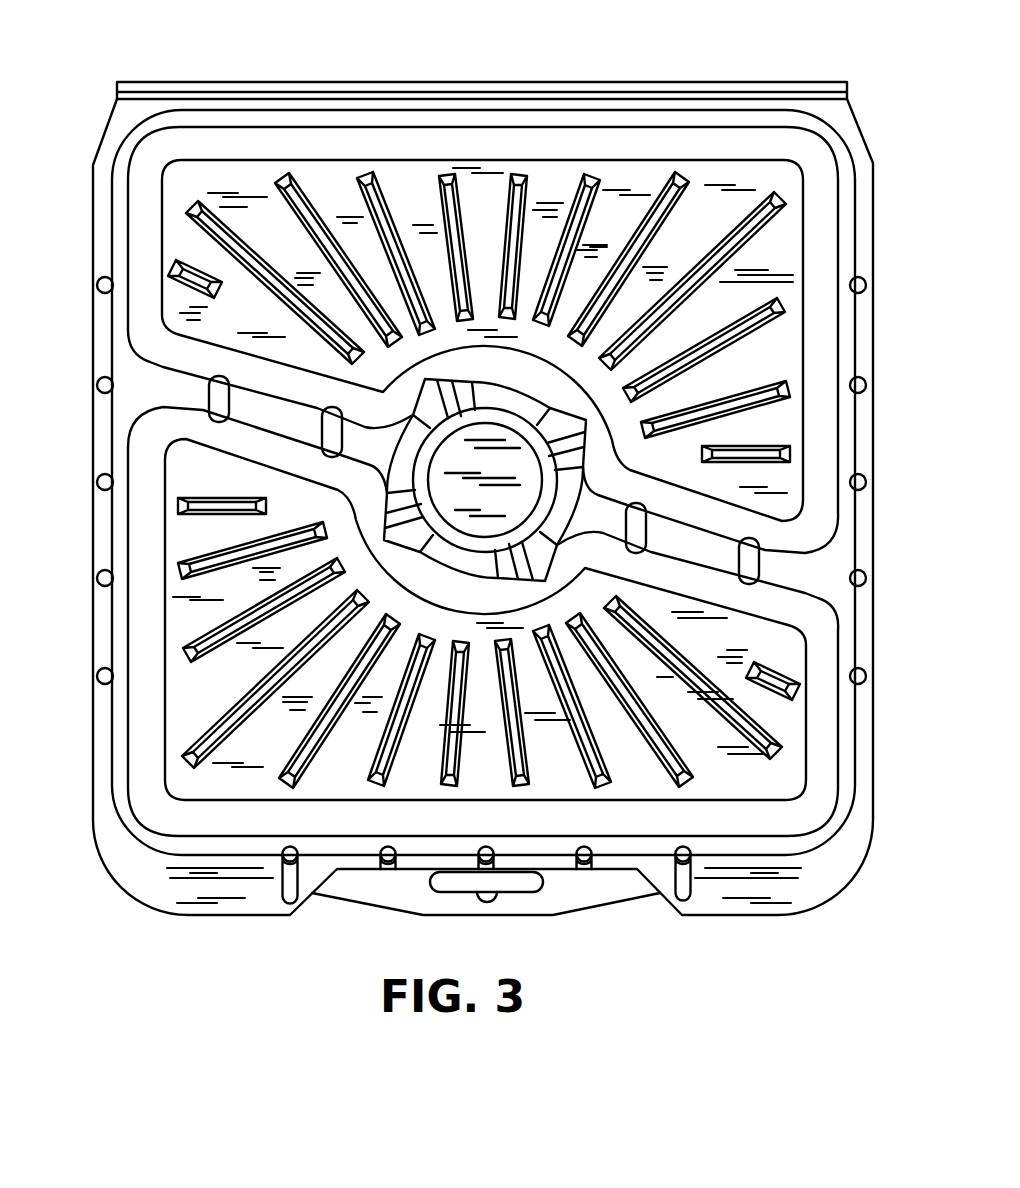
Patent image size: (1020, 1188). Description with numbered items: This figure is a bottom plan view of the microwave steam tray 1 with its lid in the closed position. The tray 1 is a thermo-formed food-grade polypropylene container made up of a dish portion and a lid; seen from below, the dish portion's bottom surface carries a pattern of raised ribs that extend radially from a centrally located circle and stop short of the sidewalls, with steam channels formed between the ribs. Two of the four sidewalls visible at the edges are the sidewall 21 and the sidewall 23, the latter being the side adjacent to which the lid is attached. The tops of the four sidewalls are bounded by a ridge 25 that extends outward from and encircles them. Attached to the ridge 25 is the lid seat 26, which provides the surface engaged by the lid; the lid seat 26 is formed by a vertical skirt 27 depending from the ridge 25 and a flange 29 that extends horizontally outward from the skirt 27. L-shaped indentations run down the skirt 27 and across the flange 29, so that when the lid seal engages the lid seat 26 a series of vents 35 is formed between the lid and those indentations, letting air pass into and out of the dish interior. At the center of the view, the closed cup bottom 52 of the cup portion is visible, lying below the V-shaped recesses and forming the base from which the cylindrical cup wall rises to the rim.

The microwave steam tray 1 is at (816, 578).
The sidewall 21 is at (212, 838).
The sidewall 23 is at (330, 125).
The ridge 25 is at (846, 706).
The lid seat 26 is at (108, 750).
The vertical skirt 27 is at (852, 815).
The flange 29 is at (803, 885).
The vents 35 is at (862, 272).
The cup bottom 52 is at (484, 476).